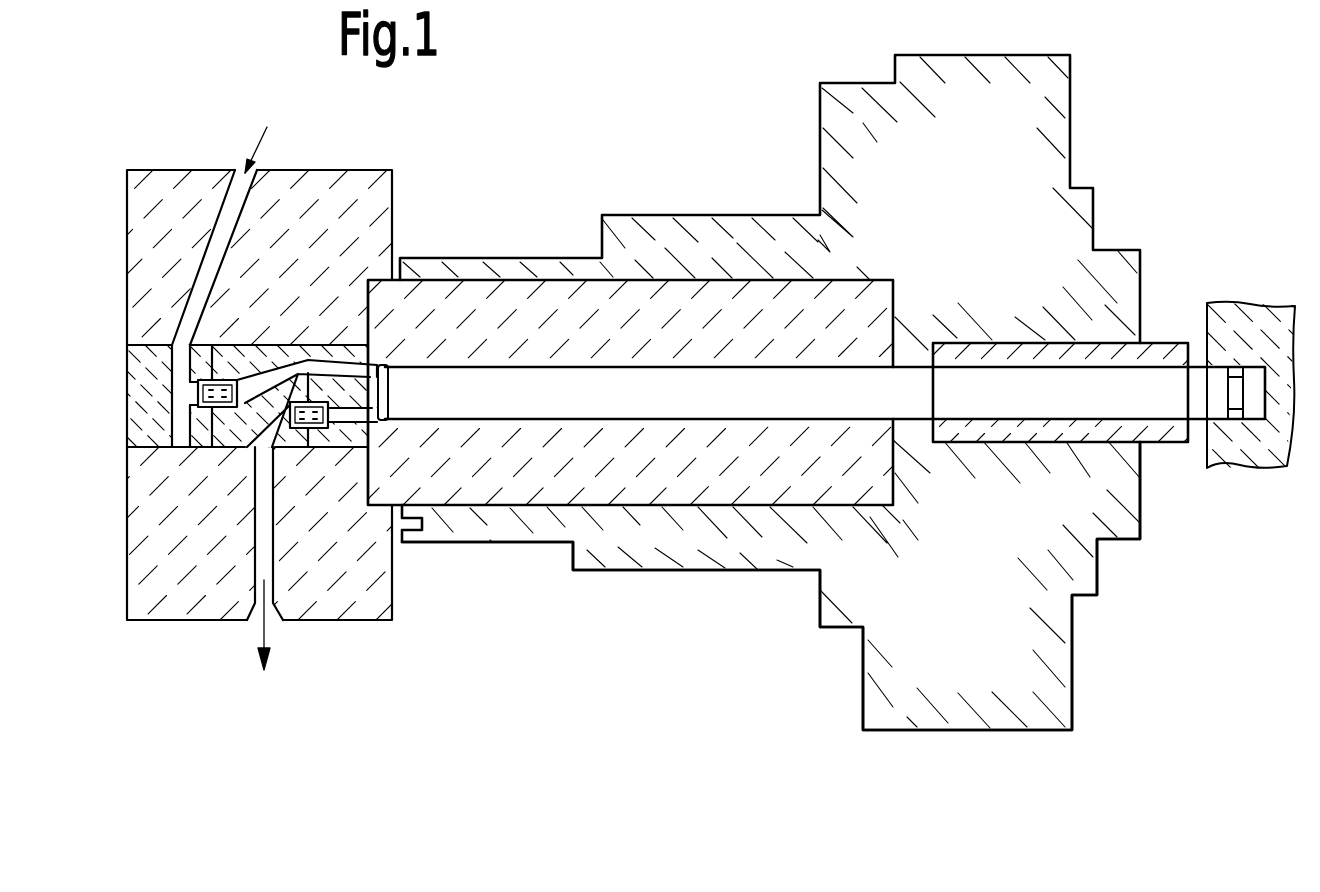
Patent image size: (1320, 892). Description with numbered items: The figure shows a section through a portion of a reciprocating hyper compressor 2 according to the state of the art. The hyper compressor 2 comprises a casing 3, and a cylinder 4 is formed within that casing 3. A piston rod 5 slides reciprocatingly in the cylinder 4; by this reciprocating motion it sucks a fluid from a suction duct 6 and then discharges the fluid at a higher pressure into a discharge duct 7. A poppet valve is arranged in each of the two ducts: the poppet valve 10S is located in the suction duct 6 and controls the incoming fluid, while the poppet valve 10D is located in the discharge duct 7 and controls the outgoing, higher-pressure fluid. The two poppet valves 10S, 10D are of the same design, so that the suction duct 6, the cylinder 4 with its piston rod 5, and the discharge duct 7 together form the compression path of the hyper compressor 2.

The hyper compressor 2 is at (633, 155).
The casing 3 is at (685, 553).
The cylinder 4 is at (377, 360).
The piston rod 5 is at (547, 392).
The suction duct 6 is at (227, 213).
The discharge duct 7 is at (263, 570).
The poppet valve in the suction duct 10S is at (228, 383).
The poppet valve in the discharge duct 10D is at (314, 430).